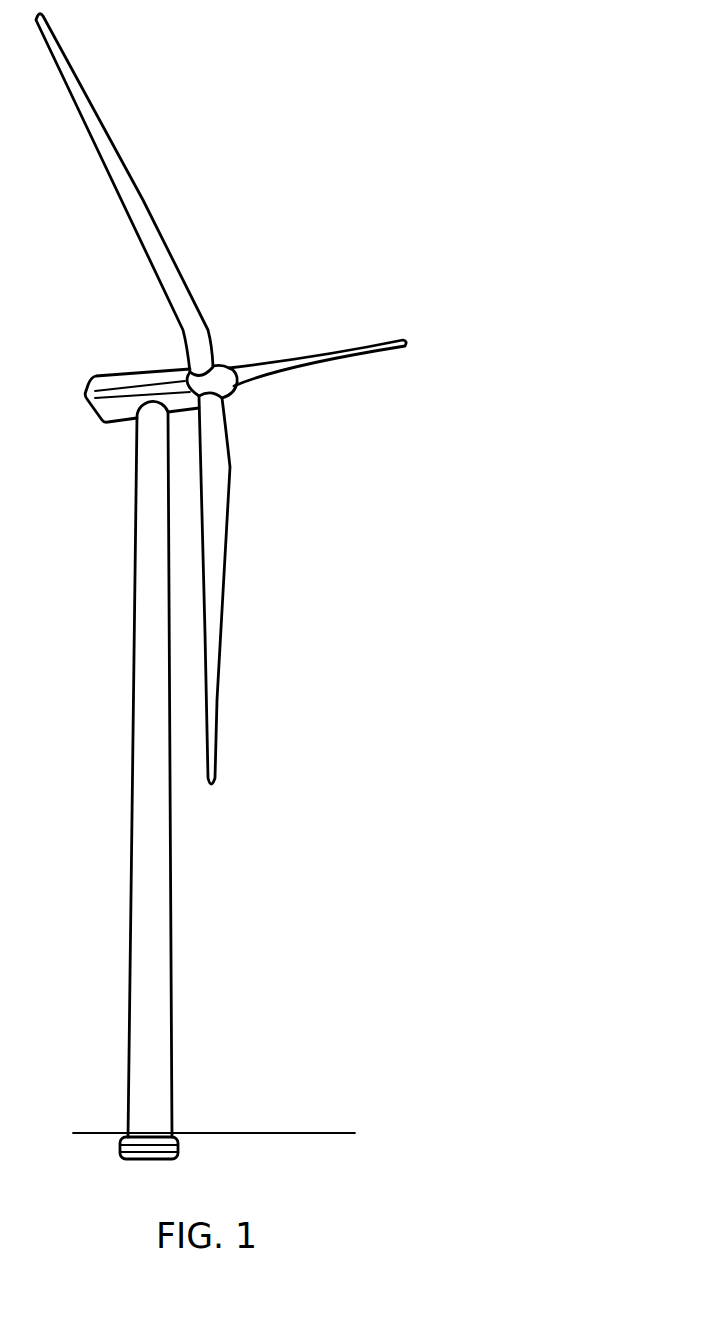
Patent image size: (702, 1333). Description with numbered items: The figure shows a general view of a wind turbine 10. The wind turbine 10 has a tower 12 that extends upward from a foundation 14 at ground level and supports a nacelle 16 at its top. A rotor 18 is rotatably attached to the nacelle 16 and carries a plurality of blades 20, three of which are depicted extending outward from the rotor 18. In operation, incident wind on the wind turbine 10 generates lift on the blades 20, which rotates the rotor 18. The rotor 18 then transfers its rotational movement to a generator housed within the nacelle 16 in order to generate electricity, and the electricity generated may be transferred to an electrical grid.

The wind turbine 10 is at (340, 124).
The tower 12 is at (172, 1020).
The foundation 14 is at (120, 1141).
The nacelle 16 is at (92, 383).
The rotor 18 is at (234, 349).
The blades 20 is at (82, 118).